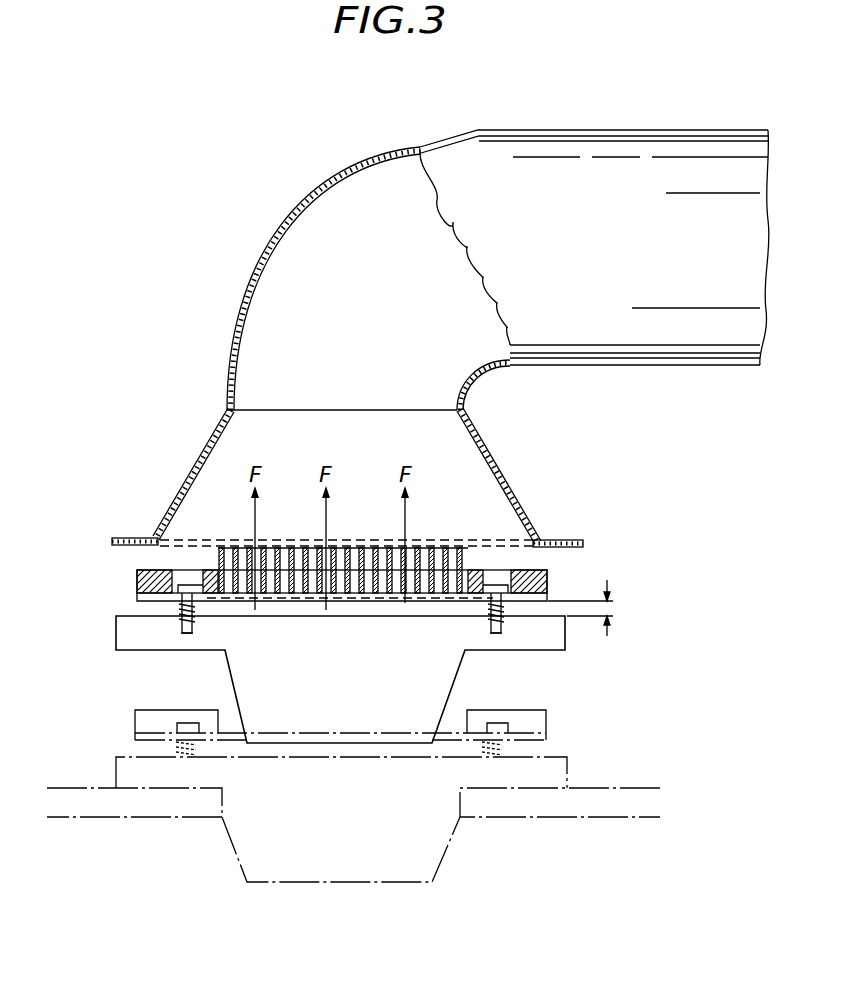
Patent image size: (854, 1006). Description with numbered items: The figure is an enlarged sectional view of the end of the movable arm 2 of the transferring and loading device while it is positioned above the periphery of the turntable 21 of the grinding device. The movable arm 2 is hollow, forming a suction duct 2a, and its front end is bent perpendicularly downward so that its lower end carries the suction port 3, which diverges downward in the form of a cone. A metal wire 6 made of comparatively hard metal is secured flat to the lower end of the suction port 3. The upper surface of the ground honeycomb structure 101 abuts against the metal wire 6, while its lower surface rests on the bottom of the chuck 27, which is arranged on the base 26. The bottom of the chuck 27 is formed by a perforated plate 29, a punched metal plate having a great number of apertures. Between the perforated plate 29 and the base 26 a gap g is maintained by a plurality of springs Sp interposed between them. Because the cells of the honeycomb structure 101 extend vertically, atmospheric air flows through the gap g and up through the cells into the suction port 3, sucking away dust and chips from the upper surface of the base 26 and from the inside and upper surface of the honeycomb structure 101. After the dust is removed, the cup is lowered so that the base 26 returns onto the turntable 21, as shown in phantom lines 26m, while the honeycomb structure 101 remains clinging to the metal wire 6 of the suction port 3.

The movable arm 2 is at (583, 128).
The suction duct 2a is at (343, 203).
The suction port 3 is at (501, 469).
The metal wire 6 is at (503, 538).
The honeycomb structure 101 is at (470, 560).
The chuck 27 is at (548, 578).
The perforated plate 29 is at (438, 602).
The springs Sp is at (184, 605).
The gap g is at (589, 608).
The base 26 is at (567, 641).
The turntable 21 is at (647, 817).
The base in lowered position 26m is at (437, 858).